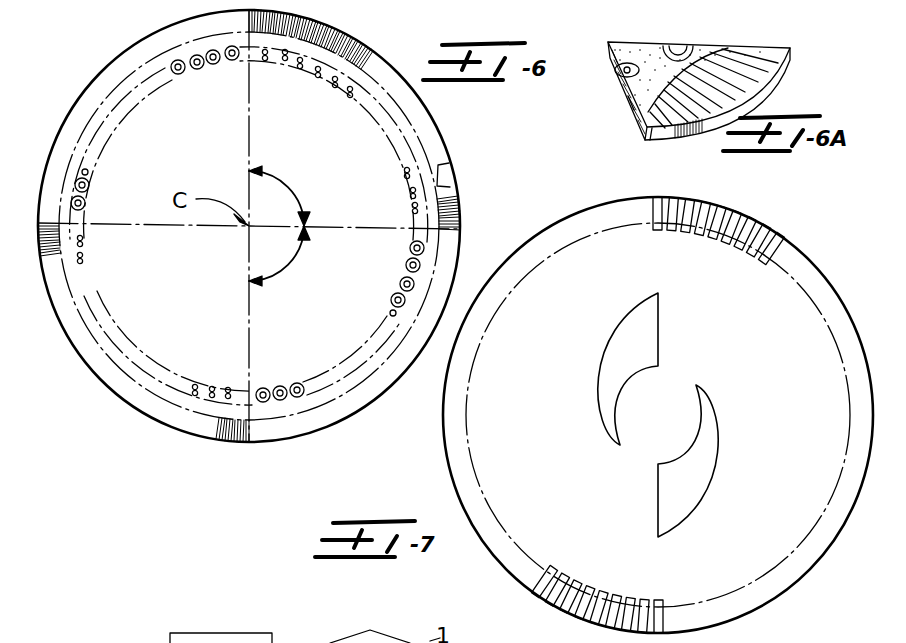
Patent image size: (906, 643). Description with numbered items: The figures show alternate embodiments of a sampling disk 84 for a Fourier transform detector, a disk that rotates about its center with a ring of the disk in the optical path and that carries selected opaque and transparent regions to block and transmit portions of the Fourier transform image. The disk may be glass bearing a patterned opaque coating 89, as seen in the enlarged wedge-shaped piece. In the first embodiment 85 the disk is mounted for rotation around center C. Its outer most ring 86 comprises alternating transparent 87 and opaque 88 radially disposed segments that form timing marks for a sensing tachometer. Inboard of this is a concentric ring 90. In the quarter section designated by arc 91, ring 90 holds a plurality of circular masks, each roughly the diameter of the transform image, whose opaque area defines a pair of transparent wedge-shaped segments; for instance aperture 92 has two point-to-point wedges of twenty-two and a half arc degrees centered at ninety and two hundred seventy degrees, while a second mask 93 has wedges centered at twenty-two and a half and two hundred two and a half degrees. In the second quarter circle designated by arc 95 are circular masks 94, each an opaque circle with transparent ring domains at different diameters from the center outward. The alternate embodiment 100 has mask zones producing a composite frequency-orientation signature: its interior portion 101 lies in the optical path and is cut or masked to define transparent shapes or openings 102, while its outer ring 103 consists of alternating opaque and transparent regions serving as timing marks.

In FIG. 6, the sampling disk 84 is at (205, 440).
In FIG. 6A, the sampling disk 84 is at (650, 141).
In FIG. 6, the embodiment of sampling disk 85 is at (302, 443).
In FIG. 6A, the embodiment of sampling disk 85 is at (622, 113).
In FIG. 6, the outer most ring 86 is at (450, 176).
In FIG. 6A, the transparent segments 87 is at (760, 100).
In FIG. 6A, the opaque segments 88 is at (690, 132).
In FIG. 6A, the patterned opaque coating 89 is at (615, 76).
In FIG. 6, the concentric ring 90 is at (400, 165).
In FIG. 6, the arc 91 is at (288, 185).
In FIG. 6, the aperture 92 is at (268, 62).
In FIG. 6, the second mask 93 is at (287, 62).
In FIG. 6, the circular masks 94 is at (400, 284).
In FIG. 6A, the circular masks 94 is at (622, 68).
In FIG. 6, the arc 95 is at (286, 266).
In FIG. 7, the alternate embodiment of disk 100 is at (508, 574).
In FIG. 7, the interior portion 101 is at (776, 369).
In FIG. 7, the transparent shapes or openings 102 is at (676, 490).
In FIG. 7, the outer ring 103 is at (787, 248).